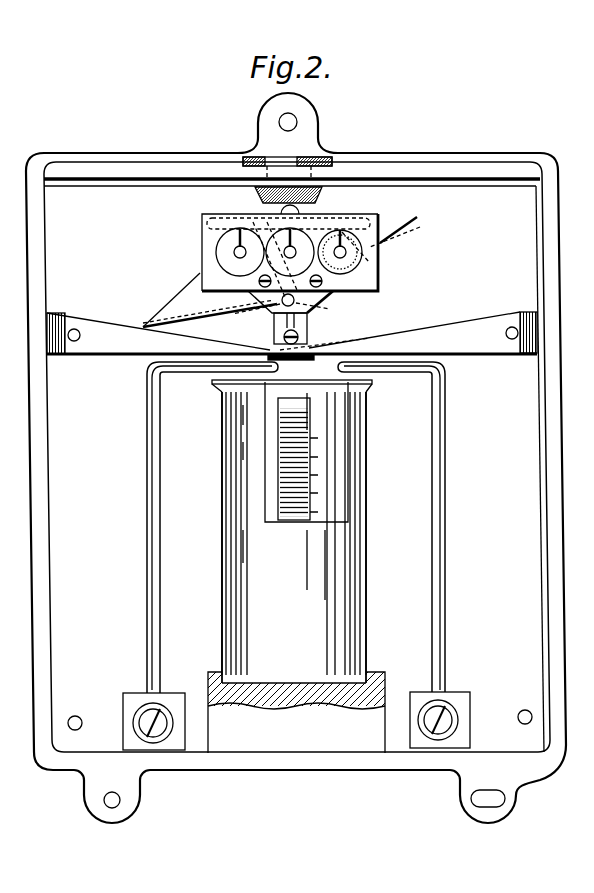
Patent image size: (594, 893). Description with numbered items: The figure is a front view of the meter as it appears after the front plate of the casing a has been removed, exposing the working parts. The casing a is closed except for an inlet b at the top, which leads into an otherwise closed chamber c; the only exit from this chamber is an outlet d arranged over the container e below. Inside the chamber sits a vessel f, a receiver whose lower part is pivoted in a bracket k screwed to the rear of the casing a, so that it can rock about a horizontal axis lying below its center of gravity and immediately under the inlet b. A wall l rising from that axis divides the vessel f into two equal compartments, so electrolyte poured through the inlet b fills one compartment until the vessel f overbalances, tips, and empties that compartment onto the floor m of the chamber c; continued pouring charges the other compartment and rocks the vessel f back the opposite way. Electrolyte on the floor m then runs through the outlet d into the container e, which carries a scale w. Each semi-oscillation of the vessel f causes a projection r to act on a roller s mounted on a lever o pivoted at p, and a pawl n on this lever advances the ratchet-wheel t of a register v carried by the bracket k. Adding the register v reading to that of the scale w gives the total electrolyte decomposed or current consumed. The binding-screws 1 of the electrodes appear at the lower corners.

The casing a is at (548, 276).
The inlet b is at (297, 170).
The chamber c is at (290, 215).
The outlet d is at (283, 331).
The container e is at (356, 478).
The vessel f is at (181, 292).
The bracket k is at (275, 331).
The wall l is at (325, 293).
The floor m is at (86, 326).
The pawl n is at (362, 234).
The lever o is at (352, 224).
The pivot p is at (205, 224).
The projection r is at (222, 244).
The roller s is at (300, 213).
The ratchet-wheel t is at (325, 284).
The register v is at (370, 263).
The scale w is at (280, 478).
The binding-screws 1 is at (143, 722).